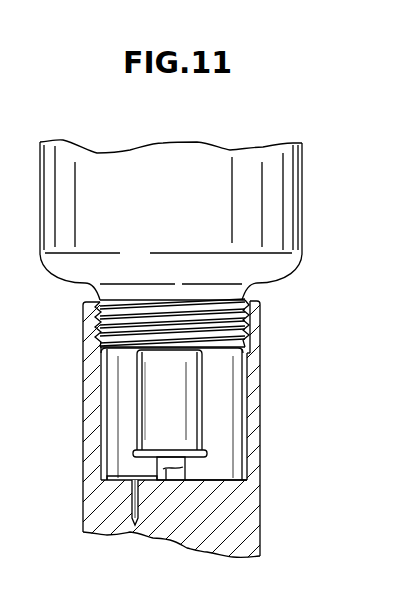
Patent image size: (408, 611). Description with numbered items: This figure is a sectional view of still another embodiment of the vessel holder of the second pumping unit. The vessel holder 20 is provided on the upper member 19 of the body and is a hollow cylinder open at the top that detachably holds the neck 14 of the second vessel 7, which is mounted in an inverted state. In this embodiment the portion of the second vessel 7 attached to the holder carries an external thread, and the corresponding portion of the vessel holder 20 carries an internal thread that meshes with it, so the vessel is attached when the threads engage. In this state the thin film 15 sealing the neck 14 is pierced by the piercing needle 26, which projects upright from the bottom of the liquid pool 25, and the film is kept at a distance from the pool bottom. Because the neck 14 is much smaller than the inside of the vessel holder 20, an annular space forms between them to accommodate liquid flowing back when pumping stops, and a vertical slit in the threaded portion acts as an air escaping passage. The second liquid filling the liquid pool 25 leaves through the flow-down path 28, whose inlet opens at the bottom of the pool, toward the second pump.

The second vessel 7 is at (287, 202).
The vessel holder 20 is at (90, 340).
The neck 14 is at (148, 408).
The thin film 15 is at (145, 467).
The liquid pool 25 is at (223, 477).
The piercing needle 26 is at (172, 480).
The flow-down path 28 is at (133, 500).
The upper member 19 is at (92, 503).